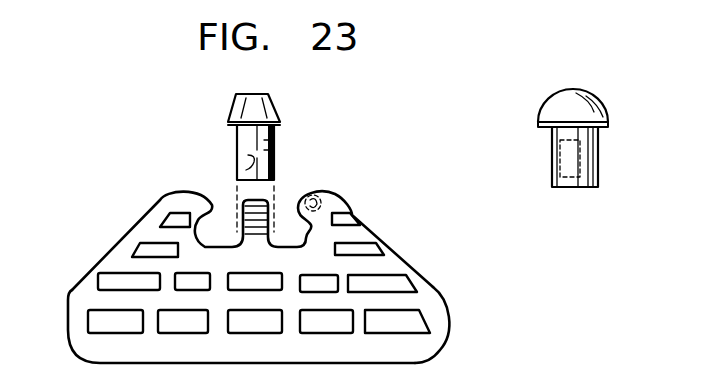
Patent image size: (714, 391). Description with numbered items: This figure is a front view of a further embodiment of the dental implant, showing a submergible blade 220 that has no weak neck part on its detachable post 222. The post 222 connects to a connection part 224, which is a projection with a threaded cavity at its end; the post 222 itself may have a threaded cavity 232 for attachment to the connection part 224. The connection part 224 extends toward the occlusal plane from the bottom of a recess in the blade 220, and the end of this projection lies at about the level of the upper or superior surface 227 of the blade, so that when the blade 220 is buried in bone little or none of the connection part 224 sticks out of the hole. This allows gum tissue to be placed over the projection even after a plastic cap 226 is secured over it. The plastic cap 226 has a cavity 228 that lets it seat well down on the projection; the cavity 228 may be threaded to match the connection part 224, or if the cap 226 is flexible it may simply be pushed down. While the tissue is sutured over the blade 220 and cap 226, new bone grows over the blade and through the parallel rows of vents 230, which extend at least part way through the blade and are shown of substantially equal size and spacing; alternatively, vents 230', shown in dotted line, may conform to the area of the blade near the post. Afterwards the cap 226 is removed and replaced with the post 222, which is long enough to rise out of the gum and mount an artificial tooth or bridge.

The submergible blade 220 is at (392, 242).
The detachable post 222 is at (274, 140).
The connection part 224 is at (242, 214).
The plastic cap 226 is at (298, 245).
The upper or superior surface of the blade 227 is at (440, 294).
The cavity of the plastic cap 228 is at (212, 211).
The vents 230 is at (230, 273).
The vents conforming to the blade area near the post 230' is at (340, 179).
The threaded cavity of the post 232 is at (246, 160).